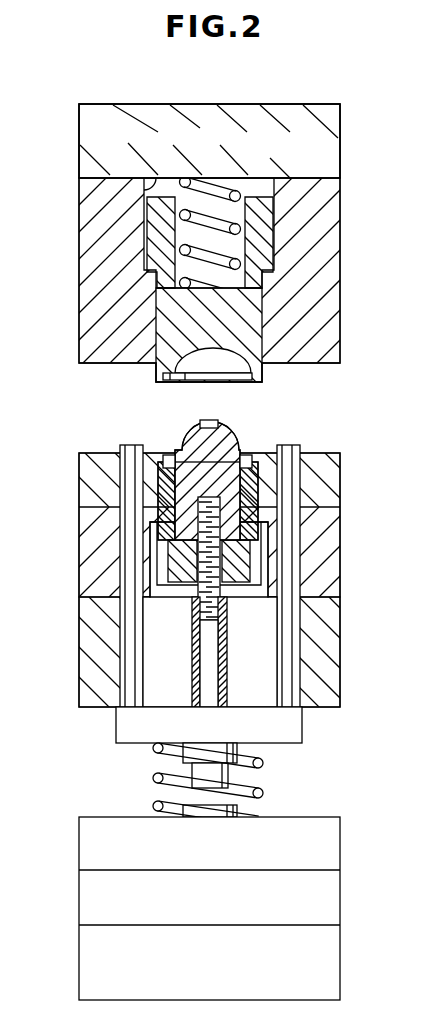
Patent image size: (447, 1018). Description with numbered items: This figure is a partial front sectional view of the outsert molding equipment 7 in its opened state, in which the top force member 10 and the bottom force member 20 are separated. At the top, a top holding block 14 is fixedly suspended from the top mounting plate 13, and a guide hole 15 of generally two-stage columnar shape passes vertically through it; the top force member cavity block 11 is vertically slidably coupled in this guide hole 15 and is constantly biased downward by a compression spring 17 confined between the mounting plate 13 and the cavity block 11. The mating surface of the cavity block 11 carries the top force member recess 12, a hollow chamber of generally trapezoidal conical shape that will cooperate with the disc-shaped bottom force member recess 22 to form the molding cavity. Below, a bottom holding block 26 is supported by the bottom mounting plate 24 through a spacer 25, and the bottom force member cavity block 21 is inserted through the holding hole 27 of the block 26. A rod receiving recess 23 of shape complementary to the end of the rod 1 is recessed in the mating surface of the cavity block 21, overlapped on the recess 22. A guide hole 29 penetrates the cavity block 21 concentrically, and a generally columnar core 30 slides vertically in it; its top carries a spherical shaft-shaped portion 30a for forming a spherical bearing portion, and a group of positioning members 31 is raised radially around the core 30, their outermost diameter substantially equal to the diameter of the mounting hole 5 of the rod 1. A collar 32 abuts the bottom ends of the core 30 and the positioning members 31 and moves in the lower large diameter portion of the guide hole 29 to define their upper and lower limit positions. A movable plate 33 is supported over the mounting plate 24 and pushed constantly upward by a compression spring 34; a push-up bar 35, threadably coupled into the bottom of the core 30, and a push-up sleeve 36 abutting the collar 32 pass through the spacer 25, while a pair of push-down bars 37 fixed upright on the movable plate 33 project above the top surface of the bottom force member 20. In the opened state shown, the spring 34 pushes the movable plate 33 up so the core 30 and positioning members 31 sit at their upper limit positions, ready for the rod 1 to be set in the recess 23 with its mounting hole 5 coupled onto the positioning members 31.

The rod 1 is at (250, 458).
The mounting hole 5 is at (245, 484).
The outsert molding equipment 7 is at (220, 89).
The top force member 10 is at (80, 302).
The cavity block 11 is at (258, 207).
The top force member recess 12 is at (176, 372).
The top mounting plate 13 is at (120, 118).
The top holding block 14 is at (95, 223).
The guide hole 15 is at (157, 186).
The compression spring 17 is at (210, 187).
The bottom force member 20 is at (80, 487).
The cavity block 21 is at (258, 585).
The bottom force member recess 22 is at (258, 465).
The rod receiving recess 23 is at (160, 463).
The bottom mounting plate 24 is at (103, 826).
The spacer 25 is at (92, 629).
The bottom holding block 26 is at (92, 553).
The holding hole 27 is at (160, 595).
The guide hole 29 is at (236, 570).
The core 30 is at (228, 428).
The spherical shaft-shaped portion 30a is at (200, 424).
The positioning members 31 is at (170, 456).
The collar 32 is at (244, 588).
The movable plate 33 is at (127, 724).
The compression spring 34 is at (160, 777).
The push-up bar 35 is at (207, 668).
The push-up sleeve 36 is at (222, 683).
The push-down bars 37 is at (120, 450).